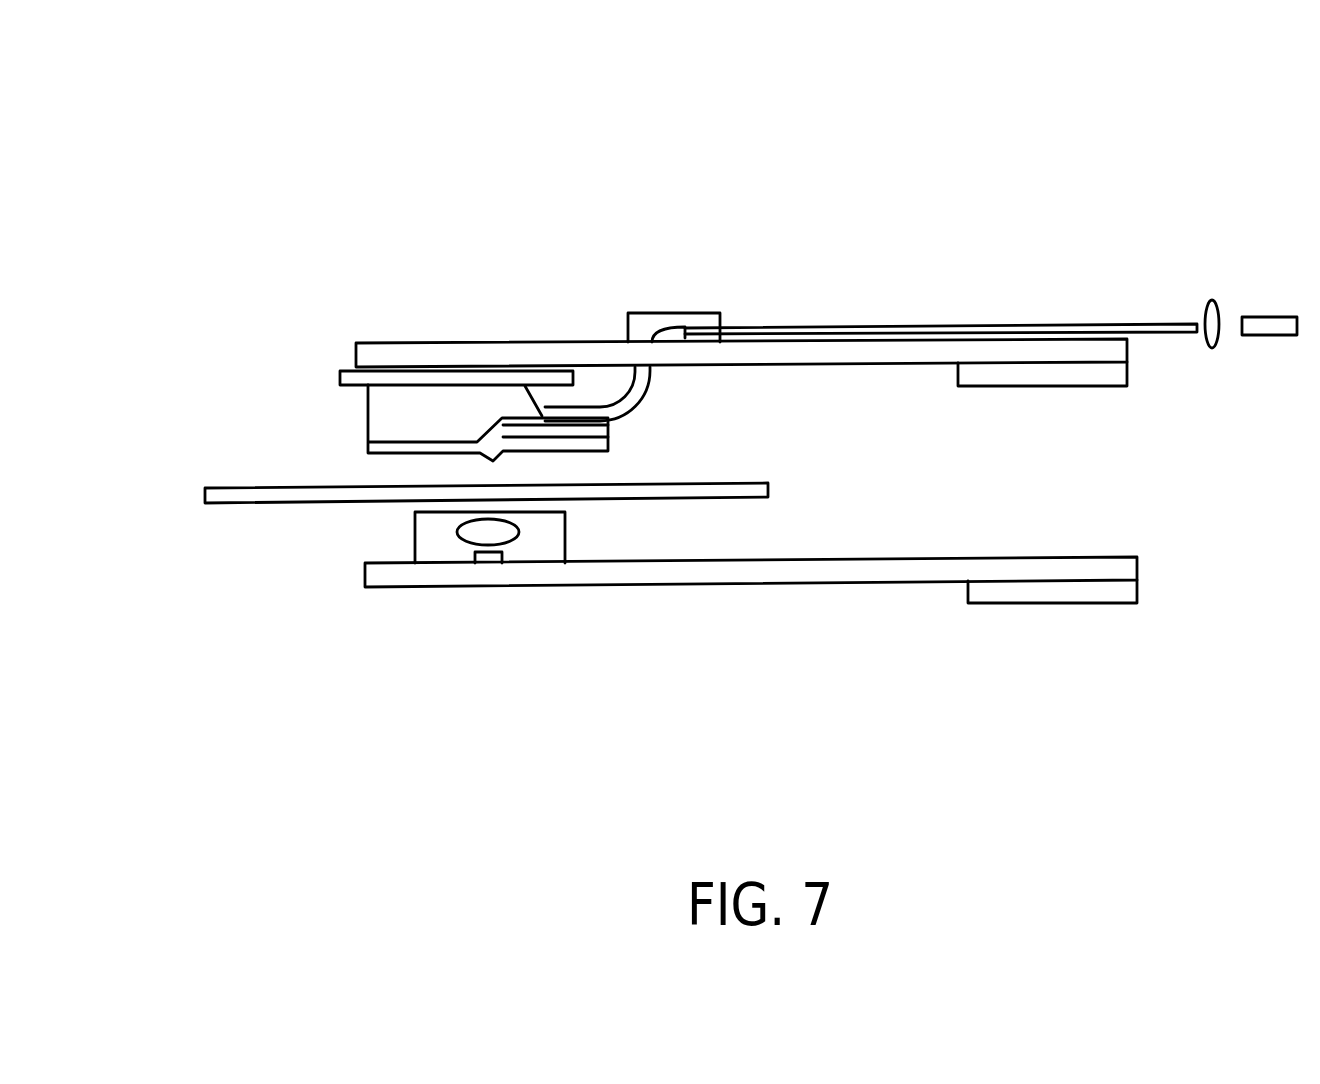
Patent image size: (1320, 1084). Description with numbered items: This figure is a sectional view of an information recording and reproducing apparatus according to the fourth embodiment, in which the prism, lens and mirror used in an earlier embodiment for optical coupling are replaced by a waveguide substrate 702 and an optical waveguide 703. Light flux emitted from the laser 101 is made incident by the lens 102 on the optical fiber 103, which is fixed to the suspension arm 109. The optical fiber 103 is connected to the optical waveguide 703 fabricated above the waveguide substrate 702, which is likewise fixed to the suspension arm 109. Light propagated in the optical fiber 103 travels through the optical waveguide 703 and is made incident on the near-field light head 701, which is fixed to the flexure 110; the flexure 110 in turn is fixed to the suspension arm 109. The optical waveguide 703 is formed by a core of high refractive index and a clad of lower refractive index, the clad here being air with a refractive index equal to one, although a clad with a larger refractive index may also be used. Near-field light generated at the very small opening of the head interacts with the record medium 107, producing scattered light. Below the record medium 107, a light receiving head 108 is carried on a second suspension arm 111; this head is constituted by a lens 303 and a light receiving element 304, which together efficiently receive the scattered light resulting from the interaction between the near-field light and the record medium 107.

The laser 101 is at (1283, 335).
The lens 102 is at (1213, 299).
The optical fiber 103 is at (955, 327).
The record medium 107 is at (310, 507).
The light receiving head 108 is at (565, 530).
The suspension arm 109 is at (875, 352).
The flexure 110 is at (343, 370).
The suspension arm 111 is at (843, 570).
The lens 303 is at (448, 528).
The light receiving element 304 is at (477, 563).
The near-field light head 701 is at (330, 390).
The waveguide substrate 702 is at (657, 312).
The optical waveguide 703 is at (638, 402).